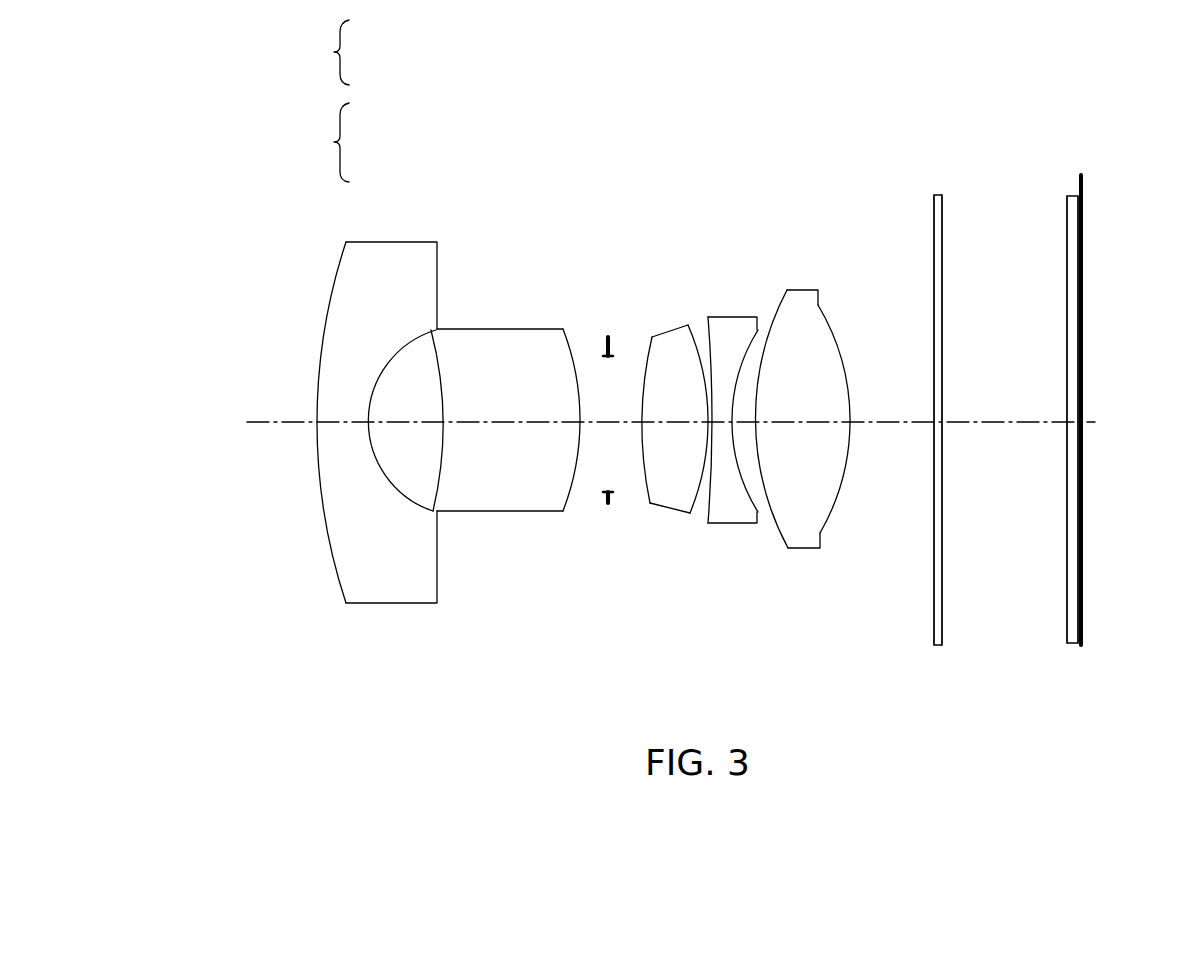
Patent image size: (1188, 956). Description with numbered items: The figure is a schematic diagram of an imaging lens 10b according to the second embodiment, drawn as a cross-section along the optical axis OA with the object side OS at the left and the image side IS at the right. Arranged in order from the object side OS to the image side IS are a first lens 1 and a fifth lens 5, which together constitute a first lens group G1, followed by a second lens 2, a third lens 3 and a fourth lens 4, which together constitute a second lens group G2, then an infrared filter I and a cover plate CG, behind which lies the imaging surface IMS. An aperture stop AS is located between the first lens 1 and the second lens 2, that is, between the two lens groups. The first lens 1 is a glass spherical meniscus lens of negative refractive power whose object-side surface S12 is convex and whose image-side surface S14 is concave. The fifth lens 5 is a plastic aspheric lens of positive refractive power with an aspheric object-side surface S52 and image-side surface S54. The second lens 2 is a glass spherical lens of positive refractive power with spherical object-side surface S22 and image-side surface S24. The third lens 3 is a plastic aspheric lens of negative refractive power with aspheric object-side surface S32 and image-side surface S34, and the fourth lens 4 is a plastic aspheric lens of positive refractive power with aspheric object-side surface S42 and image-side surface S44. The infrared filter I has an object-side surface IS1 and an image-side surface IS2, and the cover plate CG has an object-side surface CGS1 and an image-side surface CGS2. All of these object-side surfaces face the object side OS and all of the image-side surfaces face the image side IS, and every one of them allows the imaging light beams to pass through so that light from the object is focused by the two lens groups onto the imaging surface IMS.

The imaging lens 10b is at (235, 55).
The object side OS is at (245, 134).
The image side IS is at (1163, 130).
The first lens group G1 is at (337, 52).
The second lens group G2 is at (337, 142).
The optical axis OA is at (286, 422).
The first lens 1 is at (391, 427).
The fifth lens 5 is at (511, 426).
The second lens 2 is at (661, 435).
The third lens 3 is at (740, 424).
The fourth lens 4 is at (809, 424).
The aperture stop AS is at (608, 337).
The object-side surface of the first lens S12 is at (337, 575).
The image-side surface of the first lens S14 is at (422, 508).
The object-side surface of the fifth lens S52 is at (437, 483).
The image-side surface of the fifth lens S54 is at (565, 500).
The object-side surface of the second lens S22 is at (648, 490).
The image-side surface of the second lens S24 is at (692, 508).
The object-side surface of the third lens S32 is at (704, 510).
The image-side surface of the third lens S34 is at (757, 508).
The object-side surface of the fourth lens S42 is at (782, 540).
The image-side surface of the fourth lens S44 is at (825, 530).
The infrared filter I is at (934, 412).
The object-side surface of the infrared filter IS1 is at (934, 608).
The image-side surface of the infrared filter IS2 is at (943, 625).
The cover plate CG is at (1066, 415).
The object-side surface of the cover plate CGS1 is at (1068, 618).
The image-side surface of the cover plate CGS2 is at (1079, 640).
The image sensor / imaging surface IMS is at (1083, 208).